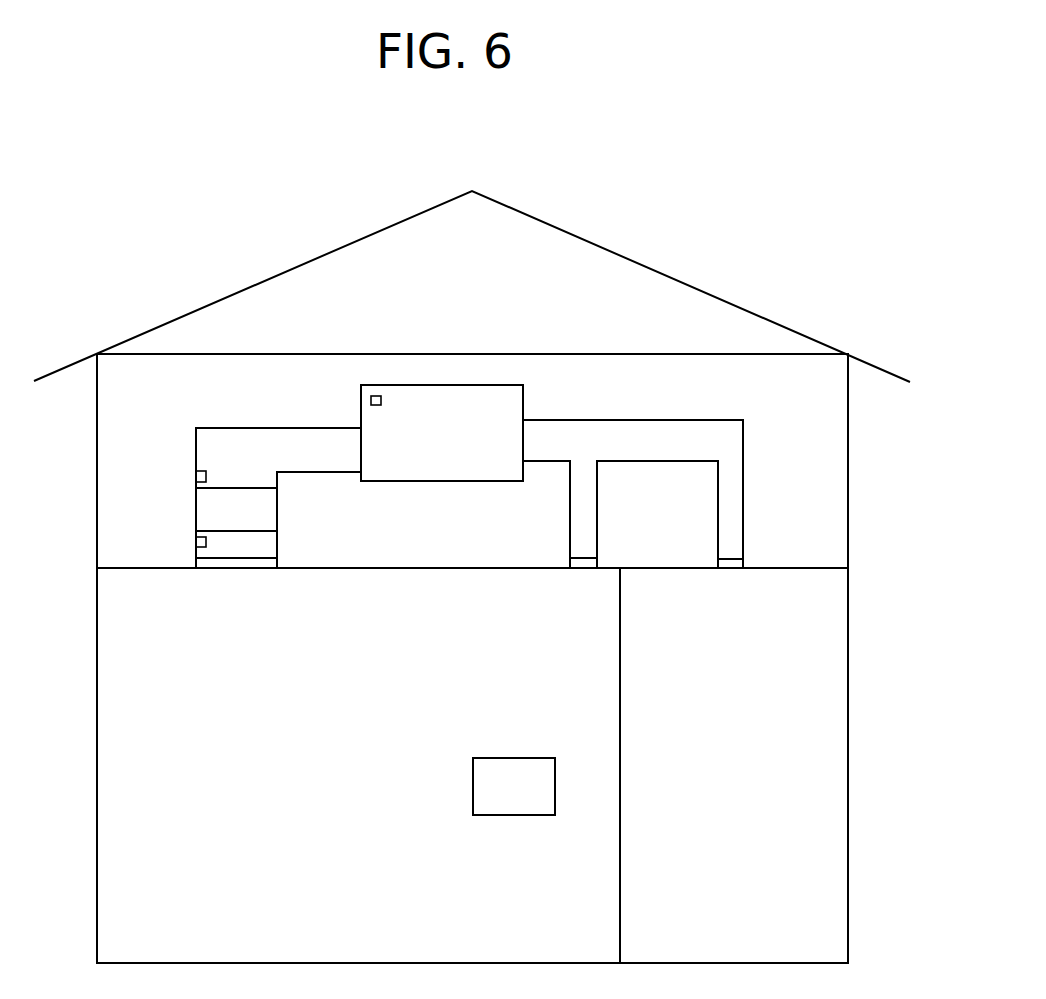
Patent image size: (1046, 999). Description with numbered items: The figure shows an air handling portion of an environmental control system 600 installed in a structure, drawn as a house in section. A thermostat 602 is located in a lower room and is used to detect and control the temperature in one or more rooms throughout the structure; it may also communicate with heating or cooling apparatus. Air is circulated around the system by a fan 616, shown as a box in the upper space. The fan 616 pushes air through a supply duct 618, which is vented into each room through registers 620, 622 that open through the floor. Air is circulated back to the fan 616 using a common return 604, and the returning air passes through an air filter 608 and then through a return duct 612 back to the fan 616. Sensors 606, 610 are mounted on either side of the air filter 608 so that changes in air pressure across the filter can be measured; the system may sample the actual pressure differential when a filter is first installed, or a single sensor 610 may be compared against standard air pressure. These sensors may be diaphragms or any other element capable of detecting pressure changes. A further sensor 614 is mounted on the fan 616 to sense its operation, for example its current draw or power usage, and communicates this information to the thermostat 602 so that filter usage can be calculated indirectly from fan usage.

The environmental control system 600 is at (728, 243).
The thermostat 602 is at (537, 798).
The common return 604 is at (228, 570).
The sensor 606 is at (196, 542).
The air filter 608 is at (260, 522).
The sensor 610 is at (196, 477).
The return duct 612 is at (320, 467).
The sensor 614 is at (371, 401).
The fan 616 is at (462, 448).
The supply duct 618 is at (677, 454).
The register 620 is at (580, 570).
The register 622 is at (729, 570).